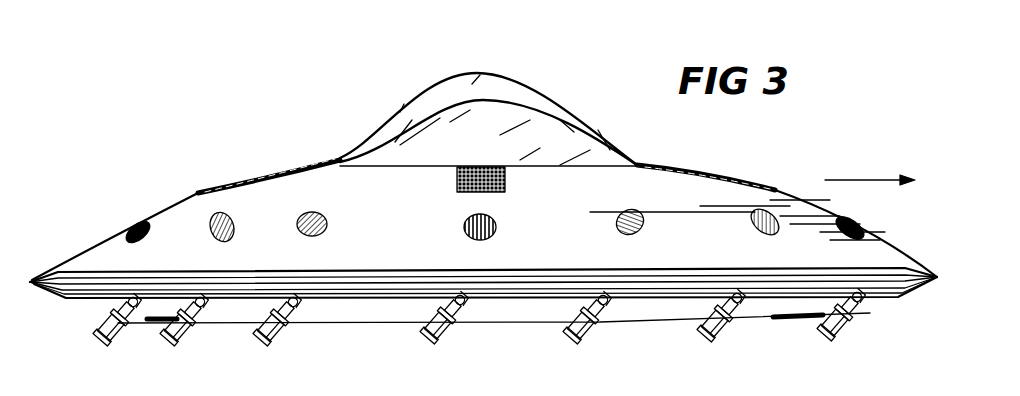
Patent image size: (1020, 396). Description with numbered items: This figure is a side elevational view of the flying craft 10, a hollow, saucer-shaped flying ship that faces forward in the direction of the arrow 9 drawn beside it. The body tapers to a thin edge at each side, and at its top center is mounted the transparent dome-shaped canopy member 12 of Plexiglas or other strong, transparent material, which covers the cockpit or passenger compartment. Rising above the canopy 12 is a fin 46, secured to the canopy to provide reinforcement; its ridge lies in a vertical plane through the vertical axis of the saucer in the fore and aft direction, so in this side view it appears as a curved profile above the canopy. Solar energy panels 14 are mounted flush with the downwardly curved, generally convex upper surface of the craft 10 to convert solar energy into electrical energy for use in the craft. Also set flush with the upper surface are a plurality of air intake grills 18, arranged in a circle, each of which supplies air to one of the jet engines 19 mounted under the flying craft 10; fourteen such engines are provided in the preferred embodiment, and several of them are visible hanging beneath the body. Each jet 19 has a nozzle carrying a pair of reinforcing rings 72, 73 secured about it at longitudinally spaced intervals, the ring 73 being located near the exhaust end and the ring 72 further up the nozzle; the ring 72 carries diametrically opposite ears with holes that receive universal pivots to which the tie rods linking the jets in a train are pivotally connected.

The arrow 9 is at (876, 178).
The flying craft 10 is at (757, 138).
The transparent dome-shaped canopy member 12 is at (537, 133).
The solar energy panels 14 is at (264, 176).
The air intake grills 18 is at (300, 224).
The jet engines 19 is at (165, 341).
The fin 46 is at (510, 80).
The reinforcing ring 72 is at (295, 328).
The reinforcing ring 73 is at (283, 336).